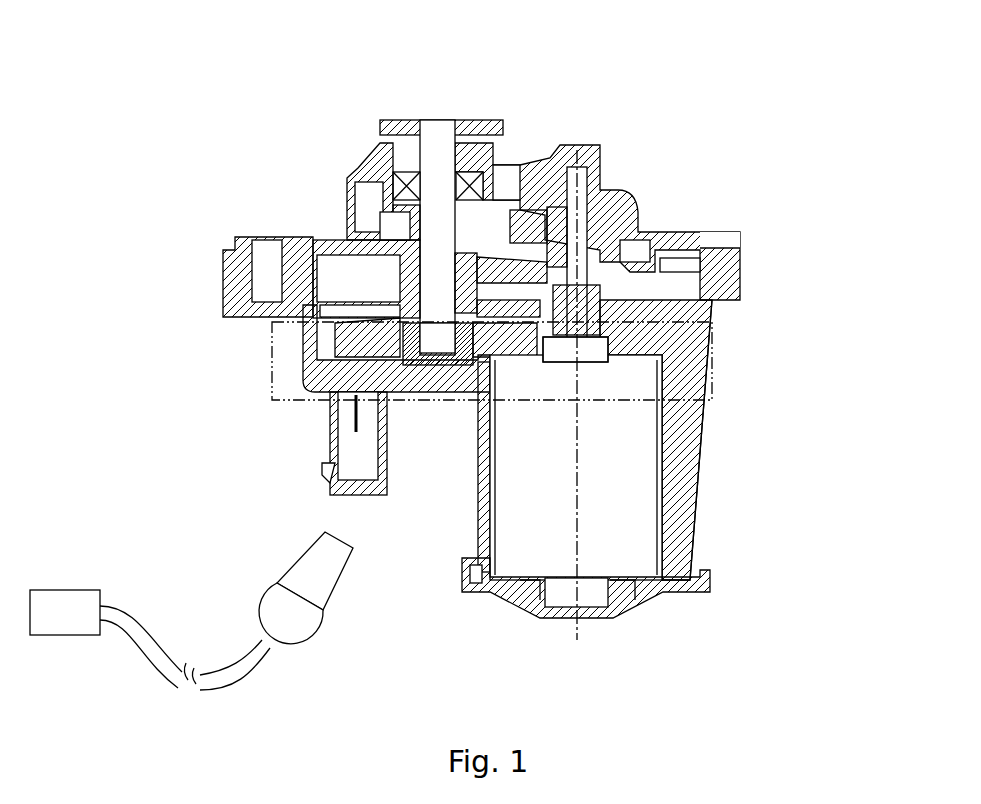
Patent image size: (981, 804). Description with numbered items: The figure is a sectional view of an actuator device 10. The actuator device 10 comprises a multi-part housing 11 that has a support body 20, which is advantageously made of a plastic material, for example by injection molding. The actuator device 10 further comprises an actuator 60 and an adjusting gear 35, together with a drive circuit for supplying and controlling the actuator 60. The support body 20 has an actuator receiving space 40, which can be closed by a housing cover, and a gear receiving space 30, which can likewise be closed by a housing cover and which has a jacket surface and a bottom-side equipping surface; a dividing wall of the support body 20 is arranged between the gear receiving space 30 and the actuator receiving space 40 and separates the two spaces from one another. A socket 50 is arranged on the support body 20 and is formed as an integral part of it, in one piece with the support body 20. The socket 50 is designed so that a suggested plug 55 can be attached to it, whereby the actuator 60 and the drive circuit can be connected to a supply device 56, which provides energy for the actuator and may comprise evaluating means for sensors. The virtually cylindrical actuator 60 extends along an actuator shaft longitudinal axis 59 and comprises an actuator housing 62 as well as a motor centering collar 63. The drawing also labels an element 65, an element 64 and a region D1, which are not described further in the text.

The actuator device 10 is at (511, 353).
The housing 11 is at (668, 200).
The adjusting gear 35 is at (393, 143).
The gear receiving space 30 is at (338, 292).
The support body 20 is at (310, 373).
The socket 50 is at (330, 455).
The supply device 56 is at (51, 625).
The plug 55 is at (300, 633).
The actuator shaft longitudinal axis 59 is at (570, 630).
The actuator receiving space 40 is at (650, 585).
The actuator 60 is at (589, 462).
The actuator housing 62 is at (690, 410).
The housing wall 65 is at (668, 468).
The motor centering collar 63 is at (600, 342).
The bearing 64 is at (575, 349).
The dashed region D1 is at (272, 340).